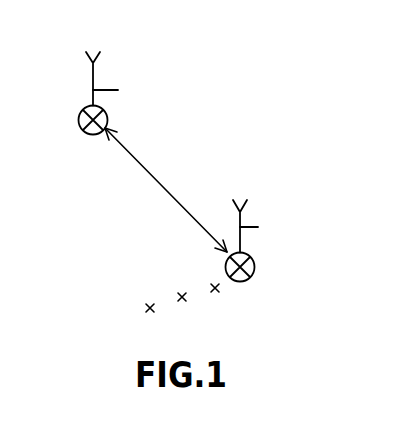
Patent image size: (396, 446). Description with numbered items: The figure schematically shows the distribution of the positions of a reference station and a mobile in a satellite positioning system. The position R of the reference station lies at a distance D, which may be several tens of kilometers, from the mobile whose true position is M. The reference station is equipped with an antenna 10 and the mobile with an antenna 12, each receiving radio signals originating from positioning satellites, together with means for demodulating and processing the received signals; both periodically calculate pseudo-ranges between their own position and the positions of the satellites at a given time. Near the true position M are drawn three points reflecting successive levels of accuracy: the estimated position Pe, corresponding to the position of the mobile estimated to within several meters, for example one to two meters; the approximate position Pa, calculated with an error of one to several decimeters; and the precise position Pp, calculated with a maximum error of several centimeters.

The antenna 10 is at (110, 95).
The antenna 12 is at (265, 241).
The distance D is at (166, 190).
The position of the reference station R is at (62, 126).
The true position of the mobile M is at (275, 269).
The estimated position Pe is at (154, 323).
The approximate position Pa is at (190, 313).
The precise position Pp is at (224, 305).